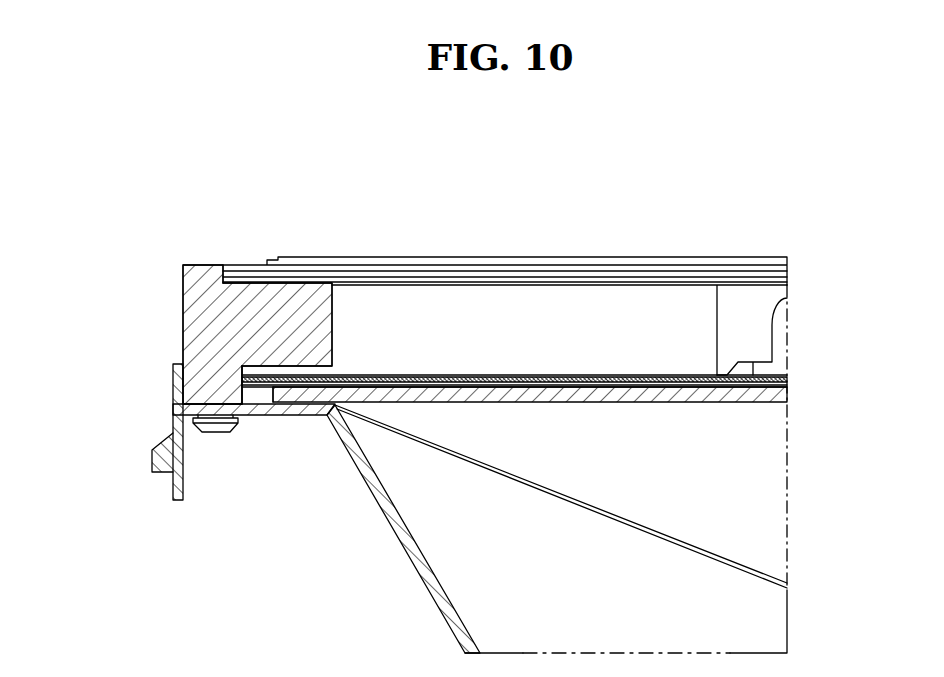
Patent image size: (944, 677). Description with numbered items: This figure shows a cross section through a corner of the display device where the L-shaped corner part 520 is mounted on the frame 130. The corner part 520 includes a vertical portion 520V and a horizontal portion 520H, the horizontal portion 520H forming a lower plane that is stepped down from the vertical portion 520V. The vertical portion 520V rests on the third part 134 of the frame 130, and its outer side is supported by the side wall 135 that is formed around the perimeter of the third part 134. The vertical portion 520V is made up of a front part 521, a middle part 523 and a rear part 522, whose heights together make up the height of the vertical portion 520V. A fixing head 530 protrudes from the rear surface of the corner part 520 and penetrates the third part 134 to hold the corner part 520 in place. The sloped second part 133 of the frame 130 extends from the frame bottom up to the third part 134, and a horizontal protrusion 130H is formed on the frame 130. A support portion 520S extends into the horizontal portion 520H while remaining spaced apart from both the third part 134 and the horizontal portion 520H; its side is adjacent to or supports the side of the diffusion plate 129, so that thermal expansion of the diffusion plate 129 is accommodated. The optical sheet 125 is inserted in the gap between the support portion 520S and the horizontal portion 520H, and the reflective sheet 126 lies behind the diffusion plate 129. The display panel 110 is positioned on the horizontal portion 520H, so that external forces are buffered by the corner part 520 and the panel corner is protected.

The display panel 110 is at (782, 267).
The optical sheet 125 is at (780, 378).
The reflective sheet 126 is at (733, 561).
The diffusion plate 129 is at (780, 392).
The frame 130 is at (230, 660).
The horizontal protrusion 130H is at (778, 335).
The second part 133 is at (420, 575).
The third part 134 is at (297, 413).
The side wall 135 is at (160, 436).
The corner part 520 is at (420, 105).
The vertical portion 520V is at (102, 265).
The horizontal portion 520H is at (295, 328).
The support portion 520S is at (262, 392).
The front part 521 is at (213, 278).
The rear part 522 is at (228, 383).
The middle part 523 is at (217, 330).
The fixing head 530 is at (219, 438).